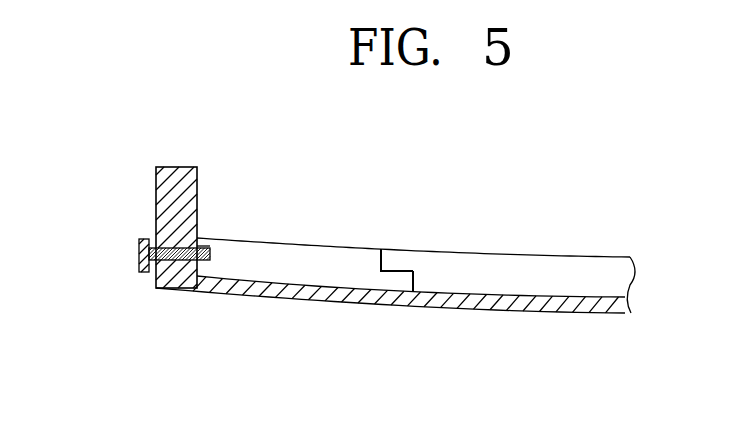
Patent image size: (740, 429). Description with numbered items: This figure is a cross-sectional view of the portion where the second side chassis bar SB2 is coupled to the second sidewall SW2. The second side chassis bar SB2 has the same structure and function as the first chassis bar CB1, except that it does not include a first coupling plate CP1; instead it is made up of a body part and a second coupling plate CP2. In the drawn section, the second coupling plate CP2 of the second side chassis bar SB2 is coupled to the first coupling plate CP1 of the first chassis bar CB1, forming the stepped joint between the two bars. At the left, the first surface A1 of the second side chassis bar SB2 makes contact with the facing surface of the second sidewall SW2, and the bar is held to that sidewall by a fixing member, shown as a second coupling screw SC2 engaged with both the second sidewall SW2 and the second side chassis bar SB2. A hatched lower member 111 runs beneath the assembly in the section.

The second sidewall SW2 is at (177, 198).
The second coupling screw SC2 is at (139, 253).
The first surface A1 is at (200, 246).
The second side chassis bar SB2 is at (340, 255).
The first coupling plate CP1 is at (400, 266).
The second coupling plate CP2 is at (395, 287).
The first chassis bar CB1 is at (543, 270).
The bottom chassis 111 is at (313, 295).